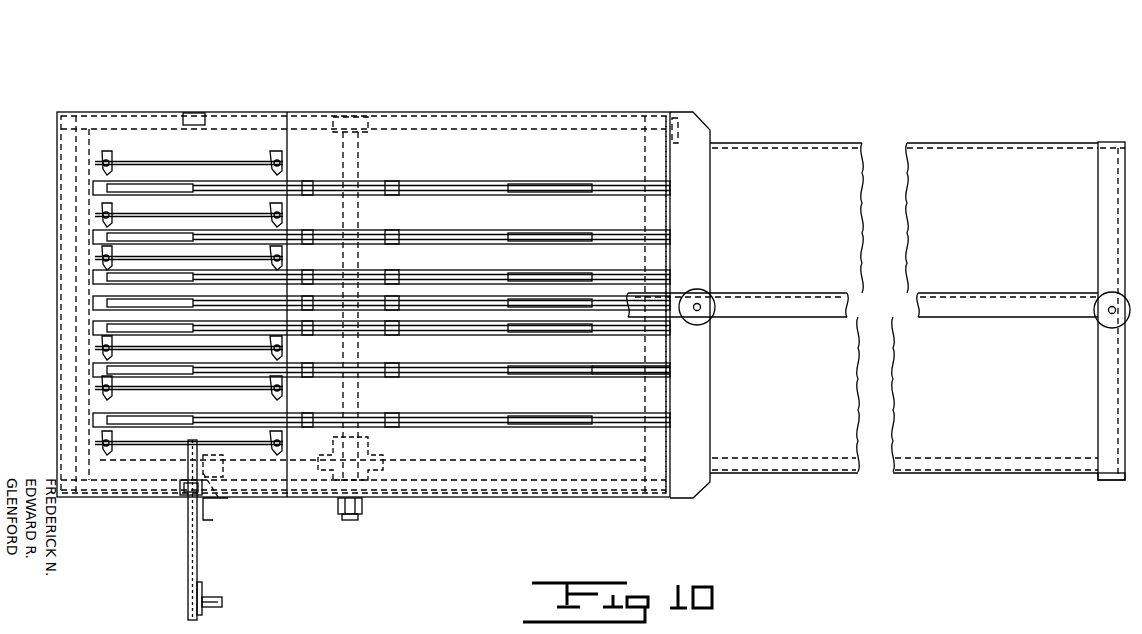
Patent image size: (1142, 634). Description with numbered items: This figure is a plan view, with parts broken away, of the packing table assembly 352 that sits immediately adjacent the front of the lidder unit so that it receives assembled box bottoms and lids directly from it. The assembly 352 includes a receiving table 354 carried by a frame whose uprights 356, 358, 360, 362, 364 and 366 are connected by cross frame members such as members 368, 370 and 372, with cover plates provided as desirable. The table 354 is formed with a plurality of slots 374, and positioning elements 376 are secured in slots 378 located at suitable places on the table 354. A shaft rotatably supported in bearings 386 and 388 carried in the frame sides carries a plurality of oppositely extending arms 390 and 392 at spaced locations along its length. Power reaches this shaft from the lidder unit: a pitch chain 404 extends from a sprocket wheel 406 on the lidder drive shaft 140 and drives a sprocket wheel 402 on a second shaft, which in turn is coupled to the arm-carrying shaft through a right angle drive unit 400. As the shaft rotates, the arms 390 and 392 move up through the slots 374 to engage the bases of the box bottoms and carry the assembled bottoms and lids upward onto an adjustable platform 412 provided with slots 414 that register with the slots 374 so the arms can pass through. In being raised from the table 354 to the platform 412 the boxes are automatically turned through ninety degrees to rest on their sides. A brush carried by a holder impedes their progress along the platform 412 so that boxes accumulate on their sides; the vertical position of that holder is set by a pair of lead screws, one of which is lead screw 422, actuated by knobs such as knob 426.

The upright 358 is at (73, 113).
The upright 356 is at (73, 497).
The receiving table 354 is at (163, 483).
The adjustable platform 412 is at (465, 487).
The cross frame member 368 is at (83, 460).
The cross frame member 370 is at (648, 443).
The bearing 386 is at (375, 117).
The upright 360 is at (665, 112).
The upright 362 is at (658, 505).
The arm 390 is at (105, 237).
The arm 392 is at (497, 228).
The slot 414 is at (608, 378).
The slot 378 is at (157, 222).
The positioning element 376 is at (106, 170).
The slot 374 is at (280, 273).
The right angle drive unit 400 is at (372, 458).
The bearing 388 is at (340, 522).
The pitch chain 404 is at (198, 552).
The sprocket wheel 402 is at (215, 502).
The sprocket wheel 406 is at (190, 600).
The drive shaft 140 is at (222, 598).
The packing table assembly 352 is at (782, 490).
The knob 426 is at (1095, 322).
The lead screw 422 is at (1108, 325).
The upright 364 is at (1106, 142).
The cross frame member 372 is at (1105, 213).
The upright 366 is at (1104, 483).